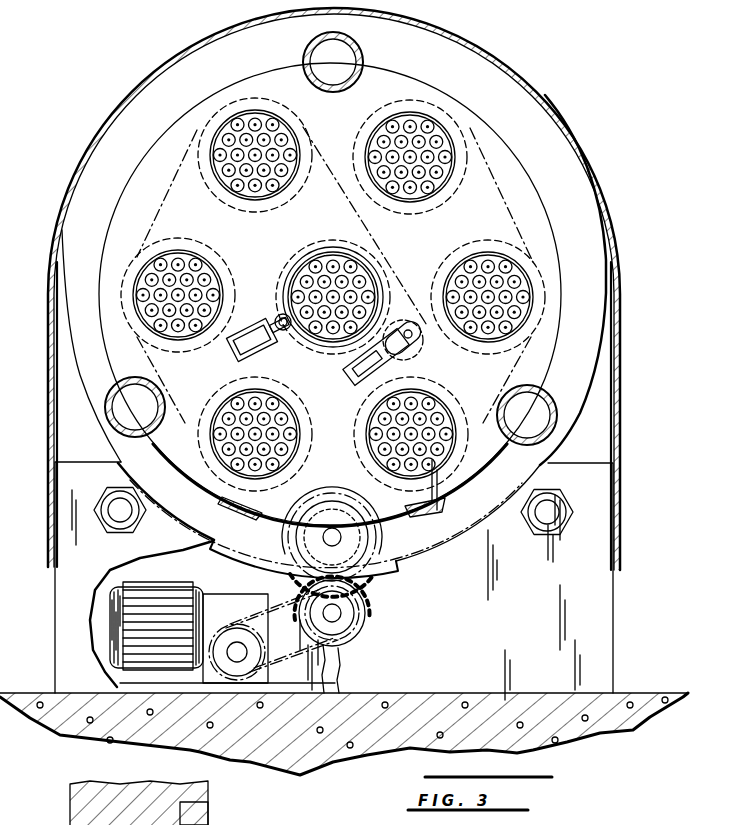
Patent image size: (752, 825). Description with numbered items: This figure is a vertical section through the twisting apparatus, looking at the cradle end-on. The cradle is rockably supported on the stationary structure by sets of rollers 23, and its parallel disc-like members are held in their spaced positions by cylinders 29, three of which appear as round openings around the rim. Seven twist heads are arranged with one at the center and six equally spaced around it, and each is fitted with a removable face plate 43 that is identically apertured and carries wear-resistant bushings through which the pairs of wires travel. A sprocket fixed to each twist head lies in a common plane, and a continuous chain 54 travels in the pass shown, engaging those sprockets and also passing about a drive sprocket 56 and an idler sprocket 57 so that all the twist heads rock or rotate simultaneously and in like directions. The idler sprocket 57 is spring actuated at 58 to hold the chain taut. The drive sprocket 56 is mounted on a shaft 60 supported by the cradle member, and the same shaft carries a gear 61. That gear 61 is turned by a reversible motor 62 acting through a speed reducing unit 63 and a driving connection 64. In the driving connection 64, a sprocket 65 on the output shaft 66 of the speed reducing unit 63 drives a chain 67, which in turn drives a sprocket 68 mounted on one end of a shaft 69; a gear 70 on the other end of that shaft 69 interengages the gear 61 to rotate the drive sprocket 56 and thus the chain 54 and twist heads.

The rollers 23 is at (545, 532).
The cylinders 29 is at (358, 60).
The face plate 43 is at (190, 252).
The continuous chain 54 is at (497, 208).
The drive sprocket 56 is at (328, 524).
The idler sprocket 57 is at (416, 346).
The spring actuation 58 is at (360, 383).
The shaft 60 is at (335, 541).
The gear 61 is at (372, 553).
The reversible motor 62 is at (150, 594).
The speed reducing unit 63 is at (212, 604).
The driving connection 64 is at (366, 635).
The sprocket 65 is at (262, 633).
The output shaft 66 is at (246, 656).
The chain 67 is at (270, 612).
The sprocket 68 is at (262, 652).
The shaft 69 is at (344, 614).
The gear 70 is at (330, 646).